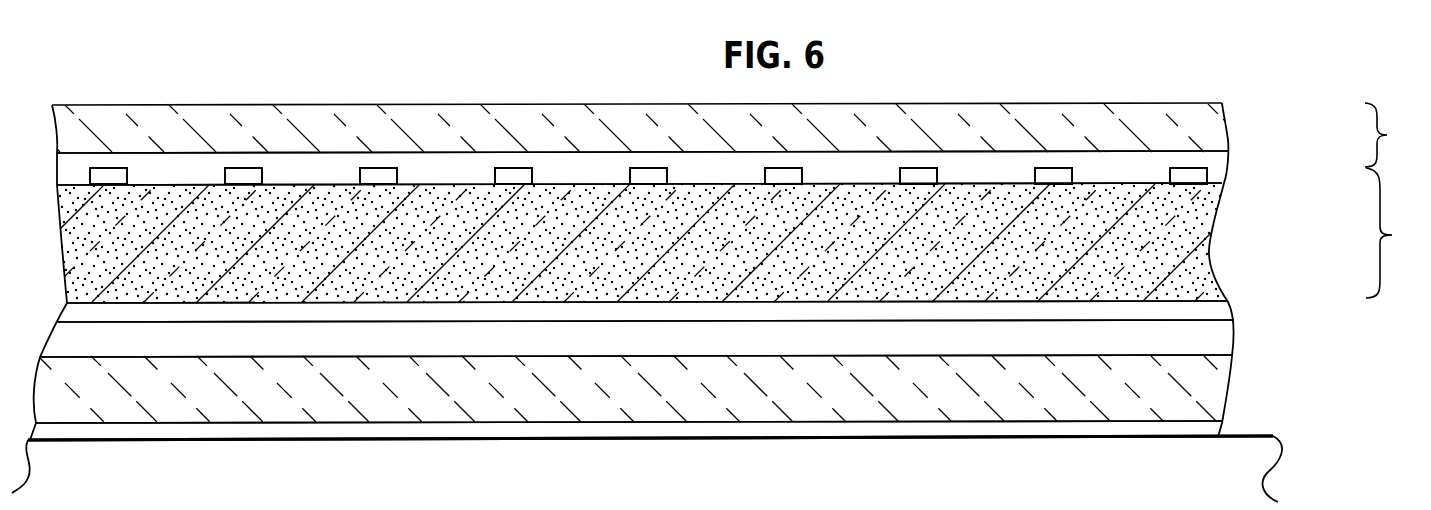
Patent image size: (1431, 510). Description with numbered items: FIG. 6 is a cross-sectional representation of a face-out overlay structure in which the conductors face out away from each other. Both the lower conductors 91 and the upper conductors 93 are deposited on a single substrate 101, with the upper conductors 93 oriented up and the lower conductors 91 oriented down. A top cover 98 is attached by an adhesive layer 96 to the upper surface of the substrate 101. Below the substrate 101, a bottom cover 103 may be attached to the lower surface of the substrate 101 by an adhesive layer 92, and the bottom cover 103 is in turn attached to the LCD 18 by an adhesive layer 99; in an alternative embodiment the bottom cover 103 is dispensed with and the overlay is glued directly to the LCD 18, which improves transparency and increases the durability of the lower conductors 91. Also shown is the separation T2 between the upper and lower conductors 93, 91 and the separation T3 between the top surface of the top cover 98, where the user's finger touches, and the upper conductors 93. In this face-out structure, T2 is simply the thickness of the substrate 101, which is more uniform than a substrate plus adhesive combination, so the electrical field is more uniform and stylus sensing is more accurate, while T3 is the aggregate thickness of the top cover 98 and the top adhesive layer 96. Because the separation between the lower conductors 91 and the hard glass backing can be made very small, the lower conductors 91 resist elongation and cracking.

The top cover 98 is at (1215, 138).
The adhesive layer 96 is at (1225, 168).
The upper conductors 93 is at (1197, 178).
The substrate 101 is at (1210, 260).
The lower conductors 91 is at (1207, 312).
The adhesive layer 92 is at (1217, 342).
The bottom cover 103 is at (1220, 383).
The adhesive layer 99 is at (1210, 427).
The LCD 18 is at (1283, 465).
The separation T3 is at (1394, 135).
The separation T2 is at (1394, 233).